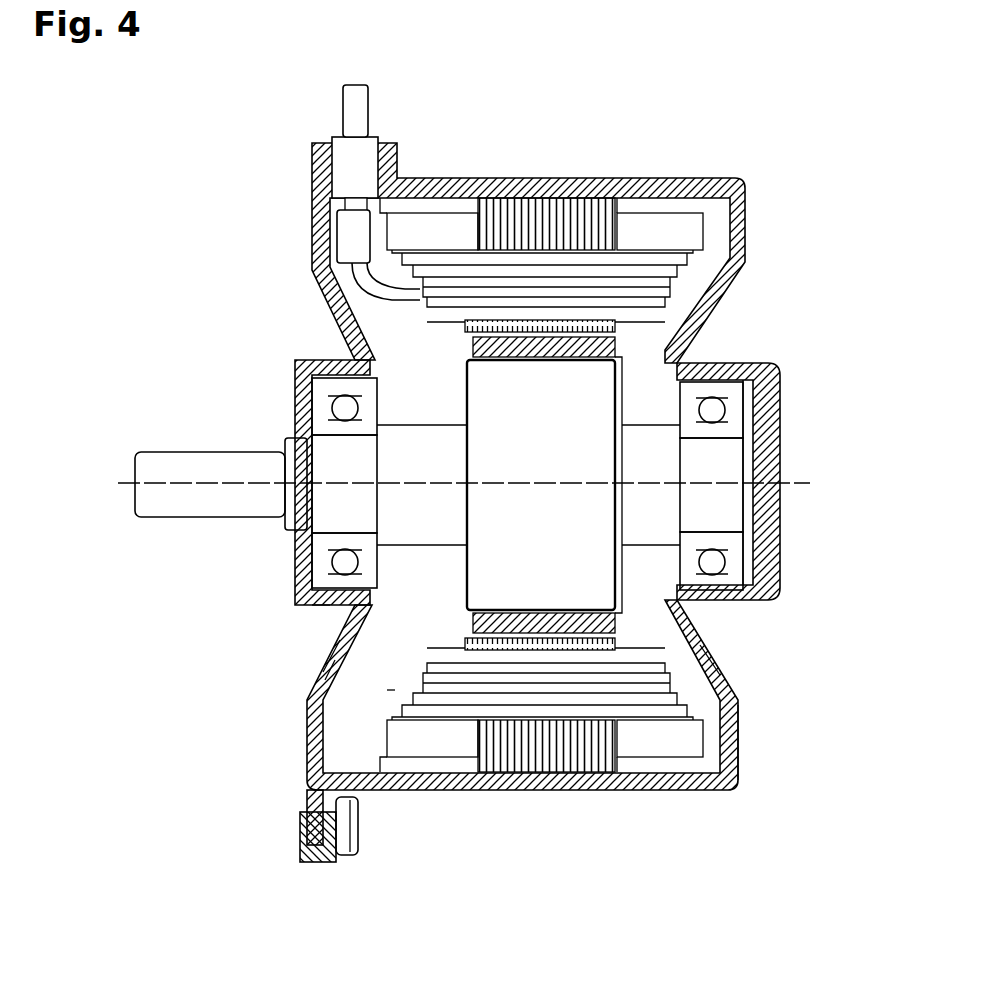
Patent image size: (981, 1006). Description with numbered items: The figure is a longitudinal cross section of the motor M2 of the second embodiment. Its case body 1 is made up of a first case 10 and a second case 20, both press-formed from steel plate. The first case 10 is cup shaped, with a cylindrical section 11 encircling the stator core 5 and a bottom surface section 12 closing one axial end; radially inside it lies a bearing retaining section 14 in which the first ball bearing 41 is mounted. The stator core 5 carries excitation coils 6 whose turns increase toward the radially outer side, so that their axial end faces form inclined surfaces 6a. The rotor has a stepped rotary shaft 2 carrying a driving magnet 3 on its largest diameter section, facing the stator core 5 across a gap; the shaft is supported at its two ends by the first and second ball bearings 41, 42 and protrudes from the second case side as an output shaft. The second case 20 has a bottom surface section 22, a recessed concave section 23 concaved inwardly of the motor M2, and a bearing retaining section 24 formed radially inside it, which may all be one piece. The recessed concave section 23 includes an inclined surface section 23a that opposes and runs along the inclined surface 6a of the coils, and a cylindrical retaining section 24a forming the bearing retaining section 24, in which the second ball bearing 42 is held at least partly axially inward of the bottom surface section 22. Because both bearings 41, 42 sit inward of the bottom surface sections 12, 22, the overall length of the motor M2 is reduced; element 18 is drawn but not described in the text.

The motor M2 is at (218, 250).
The case body 1 is at (406, 944).
The rotary shaft 2 is at (555, 470).
The driving magnet 3 is at (440, 338).
The stator core 5 is at (583, 197).
The excitation coil 6 is at (700, 264).
The inclined surface 6a is at (385, 690).
The first case 10 is at (427, 790).
The cylindrical section 11 is at (575, 792).
The bottom surface section 12 is at (738, 730).
The bearing retaining section 14 is at (745, 367).
The tapered wall portion 18 is at (700, 648).
The second case 20 is at (295, 792).
The bottom surface section 22 is at (310, 743).
The recessed concave section 23 is at (330, 647).
The inclined surface section 23a is at (330, 672).
The bearing retaining section 24 is at (295, 597).
The cylindrical retaining section 24a is at (312, 608).
The first ball bearing 41 is at (712, 562).
The second ball bearing 42 is at (300, 402).